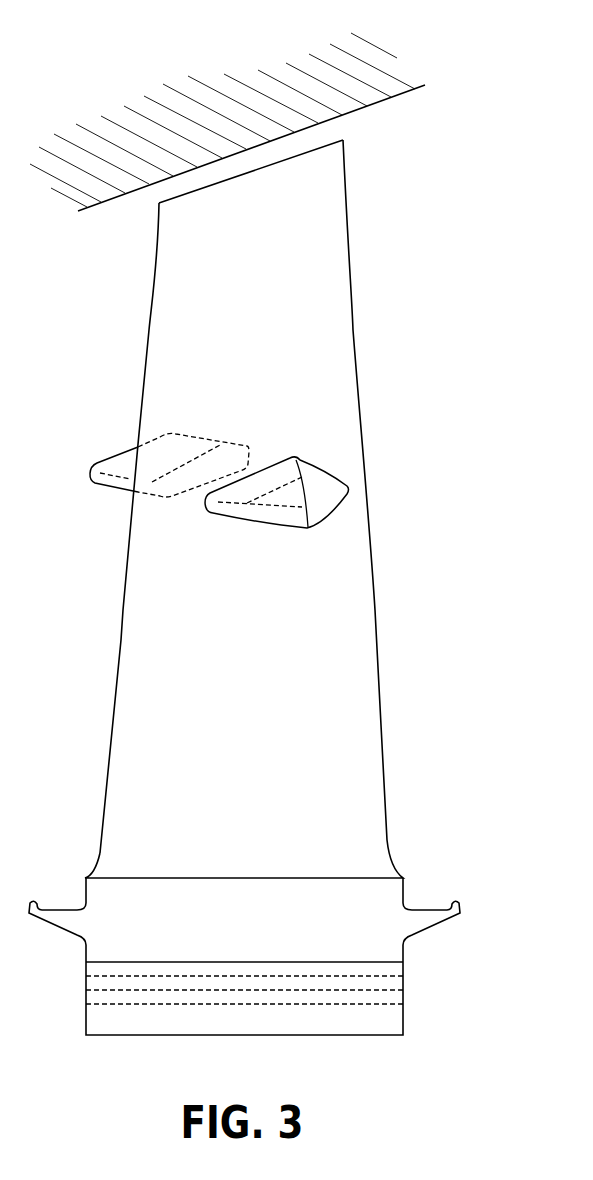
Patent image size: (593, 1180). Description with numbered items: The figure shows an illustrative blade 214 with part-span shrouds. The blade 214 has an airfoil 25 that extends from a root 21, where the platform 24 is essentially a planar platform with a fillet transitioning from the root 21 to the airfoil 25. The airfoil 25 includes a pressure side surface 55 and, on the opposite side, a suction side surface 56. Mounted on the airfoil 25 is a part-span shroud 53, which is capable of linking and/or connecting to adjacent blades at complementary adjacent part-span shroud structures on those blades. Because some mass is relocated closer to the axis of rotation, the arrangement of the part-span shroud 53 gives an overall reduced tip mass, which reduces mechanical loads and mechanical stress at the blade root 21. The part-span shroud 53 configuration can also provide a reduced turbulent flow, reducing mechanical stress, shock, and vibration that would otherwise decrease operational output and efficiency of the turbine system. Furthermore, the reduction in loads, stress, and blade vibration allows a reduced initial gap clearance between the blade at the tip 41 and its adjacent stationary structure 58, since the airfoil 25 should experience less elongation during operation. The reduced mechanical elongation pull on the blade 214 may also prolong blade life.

The blade 214 is at (258, 587).
The adjacent stationary structure 58 is at (232, 153).
The tip 41 is at (293, 157).
The airfoil 25 is at (235, 496).
The pressure side surface 55 is at (143, 675).
The suction side surface 56 is at (325, 688).
The part-span shroud 53 is at (107, 488).
The platform 24 is at (133, 877).
The root 21 is at (433, 1006).